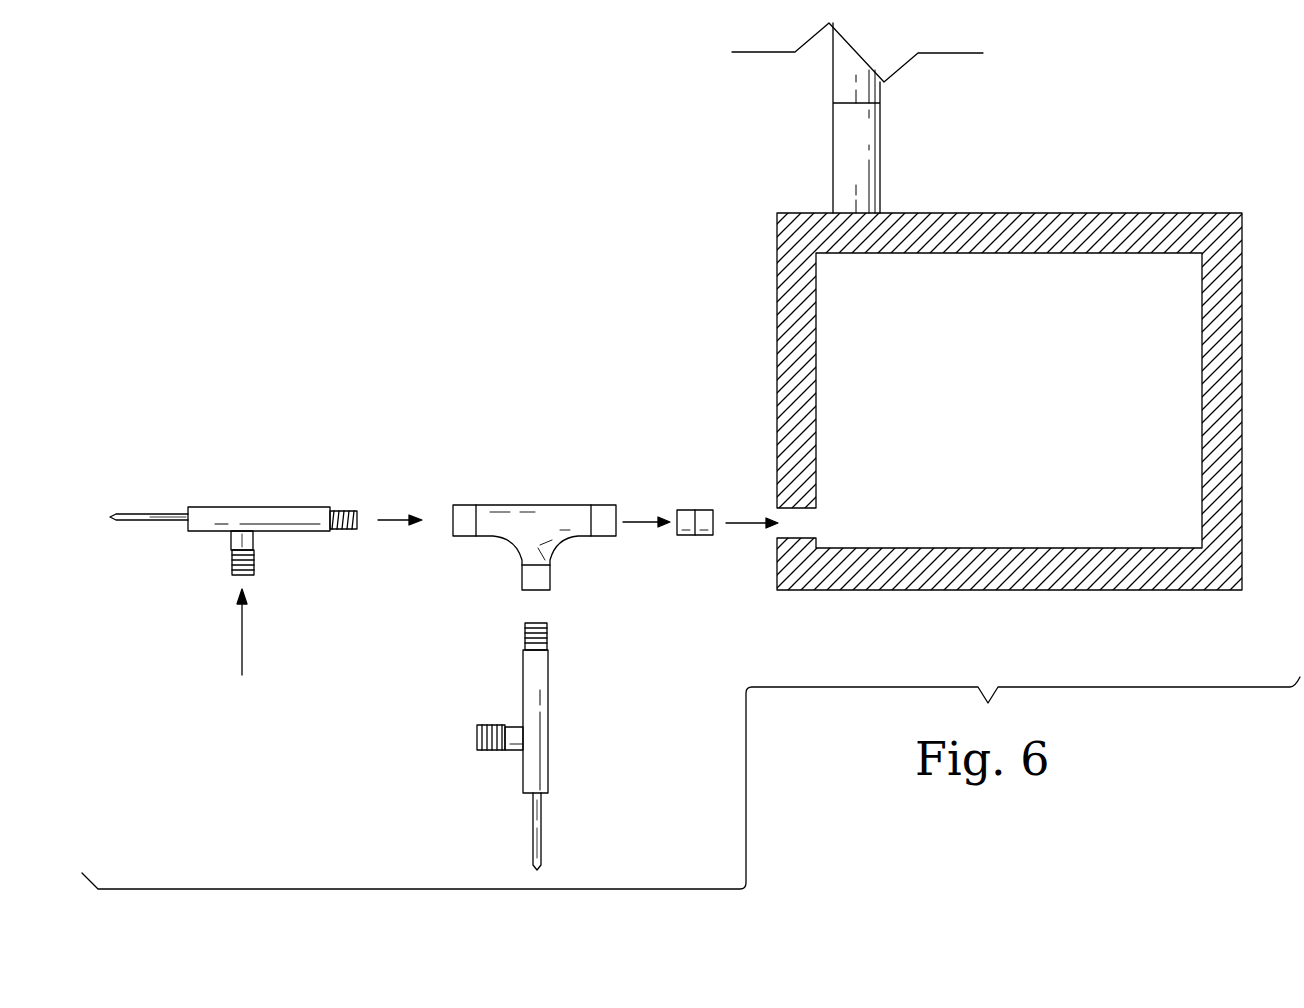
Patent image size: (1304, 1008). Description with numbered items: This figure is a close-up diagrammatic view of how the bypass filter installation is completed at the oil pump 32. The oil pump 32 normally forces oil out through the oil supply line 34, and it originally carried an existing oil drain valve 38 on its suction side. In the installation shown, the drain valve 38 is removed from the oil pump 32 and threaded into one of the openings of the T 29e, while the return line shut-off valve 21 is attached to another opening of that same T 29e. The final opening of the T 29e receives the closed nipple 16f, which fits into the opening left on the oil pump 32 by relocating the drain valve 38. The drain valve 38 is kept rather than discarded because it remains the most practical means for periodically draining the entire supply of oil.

The return line shut-off valve 21 is at (253, 507).
The T 29e is at (557, 505).
The closed nipple 16f is at (702, 536).
The oil pump 32 is at (931, 409).
The oil supply line 34 is at (880, 158).
The oil drain valve 38 is at (548, 733).